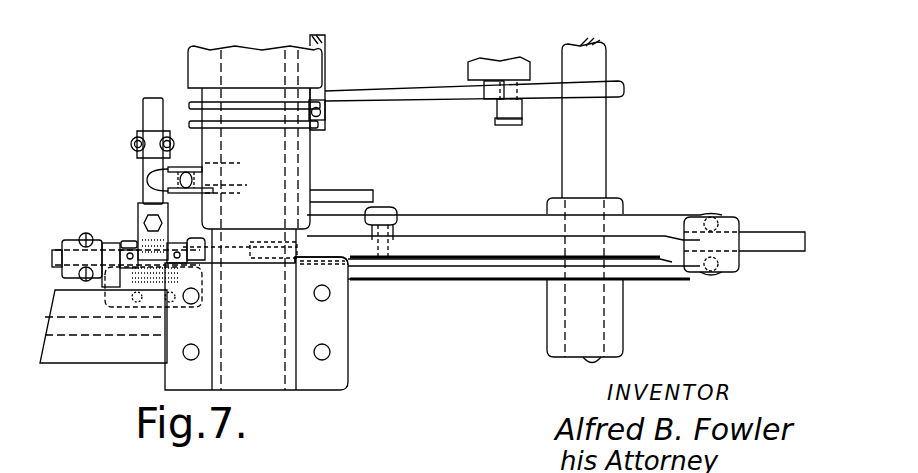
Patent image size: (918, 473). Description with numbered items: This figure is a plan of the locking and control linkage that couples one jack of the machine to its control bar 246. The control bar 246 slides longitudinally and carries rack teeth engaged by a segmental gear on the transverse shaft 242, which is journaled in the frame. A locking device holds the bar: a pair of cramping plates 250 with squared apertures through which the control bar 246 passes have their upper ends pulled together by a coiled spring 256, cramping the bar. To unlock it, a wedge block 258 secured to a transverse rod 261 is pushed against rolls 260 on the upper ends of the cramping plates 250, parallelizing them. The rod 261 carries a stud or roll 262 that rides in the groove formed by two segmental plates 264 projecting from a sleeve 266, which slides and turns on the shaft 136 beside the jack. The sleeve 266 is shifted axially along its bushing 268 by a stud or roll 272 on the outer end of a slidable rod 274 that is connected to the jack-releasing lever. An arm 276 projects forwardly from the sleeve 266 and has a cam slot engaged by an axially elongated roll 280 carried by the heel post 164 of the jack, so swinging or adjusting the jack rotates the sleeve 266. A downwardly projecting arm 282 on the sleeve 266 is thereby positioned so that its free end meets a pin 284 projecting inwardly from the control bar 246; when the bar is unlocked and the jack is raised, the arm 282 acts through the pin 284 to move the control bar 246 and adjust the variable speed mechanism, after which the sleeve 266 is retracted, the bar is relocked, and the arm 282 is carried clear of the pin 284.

The shaft 136 is at (250, 48).
The heel post 164 is at (502, 63).
The transverse shaft 242 is at (572, 362).
The control bar 246 is at (463, 250).
The cramping plate 250 is at (194, 310).
The coiled spring 256 is at (165, 243).
The wedge block 258 is at (137, 213).
The roll 260 is at (212, 261).
The transverse rod 261 is at (146, 107).
The stud or roll 262 is at (175, 180).
The segmental plate 264 is at (192, 168).
The sleeve 266 is at (254, 220).
The bushing 268 is at (300, 250).
The stud or roll 272 is at (318, 112).
The slidable rod 274 is at (326, 46).
The arm 276 is at (400, 96).
The axially elongated roll 280 is at (508, 112).
The downwardly projecting arm 282 is at (373, 195).
The pin 284 is at (388, 216).